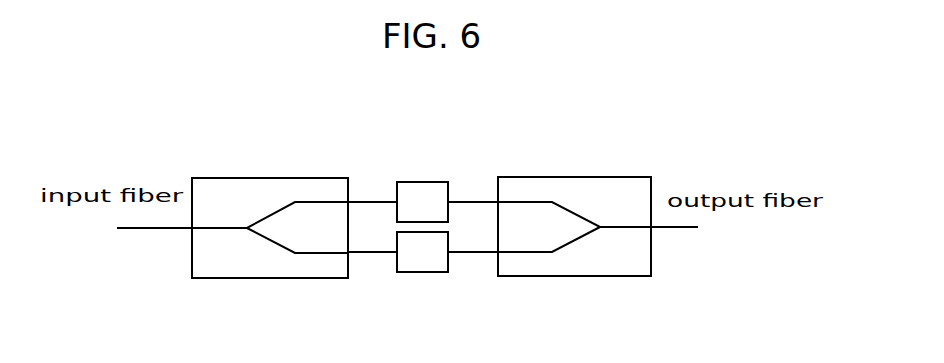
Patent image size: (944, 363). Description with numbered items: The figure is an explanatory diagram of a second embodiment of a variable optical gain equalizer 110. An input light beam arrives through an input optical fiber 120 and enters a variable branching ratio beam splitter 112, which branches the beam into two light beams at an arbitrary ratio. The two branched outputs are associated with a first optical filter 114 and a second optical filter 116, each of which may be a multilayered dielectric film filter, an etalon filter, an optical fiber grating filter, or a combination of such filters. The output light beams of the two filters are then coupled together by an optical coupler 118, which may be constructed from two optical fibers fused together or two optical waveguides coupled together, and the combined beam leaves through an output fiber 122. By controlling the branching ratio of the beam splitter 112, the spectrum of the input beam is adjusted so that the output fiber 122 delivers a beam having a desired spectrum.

The variable optical gain equalizer 110 is at (351, 162).
The variable branching ratio beam splitter 112 is at (280, 270).
The first optical filter 114 is at (428, 180).
The second optical filter 116 is at (441, 275).
The optical coupler 118 is at (599, 270).
The input optical fiber 120 is at (146, 232).
The output fiber 122 is at (688, 232).